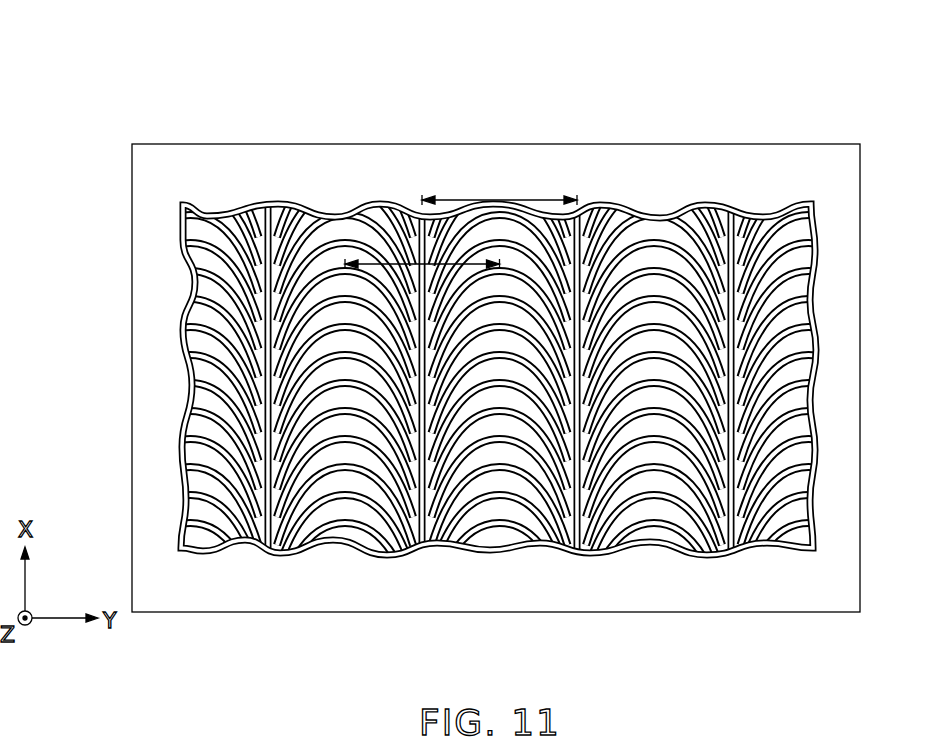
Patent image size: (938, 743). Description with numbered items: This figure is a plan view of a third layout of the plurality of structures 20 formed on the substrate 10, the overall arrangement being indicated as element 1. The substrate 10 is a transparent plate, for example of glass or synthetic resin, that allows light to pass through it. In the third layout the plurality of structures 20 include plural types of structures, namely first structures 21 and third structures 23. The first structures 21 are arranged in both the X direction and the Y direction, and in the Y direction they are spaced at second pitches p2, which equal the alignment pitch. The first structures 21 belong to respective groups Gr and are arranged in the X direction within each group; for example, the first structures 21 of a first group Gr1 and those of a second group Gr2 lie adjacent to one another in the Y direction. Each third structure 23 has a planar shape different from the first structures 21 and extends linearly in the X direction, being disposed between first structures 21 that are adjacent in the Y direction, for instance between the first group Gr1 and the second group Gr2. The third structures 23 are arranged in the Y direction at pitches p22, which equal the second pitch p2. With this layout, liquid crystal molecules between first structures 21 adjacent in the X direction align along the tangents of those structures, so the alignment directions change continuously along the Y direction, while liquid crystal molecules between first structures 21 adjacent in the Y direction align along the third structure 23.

The optical element 1 is at (806, 99).
The substrate 10 is at (856, 143).
The structures 20 is at (478, 394).
The first structures 21 is at (303, 358).
The third structures 23 is at (577, 553).
The second pitch p2 is at (390, 262).
The pitch p22 is at (490, 199).
The first group Gr1 is at (346, 568).
The second group Gr2 is at (497, 568).
The group Gr is at (649, 568).